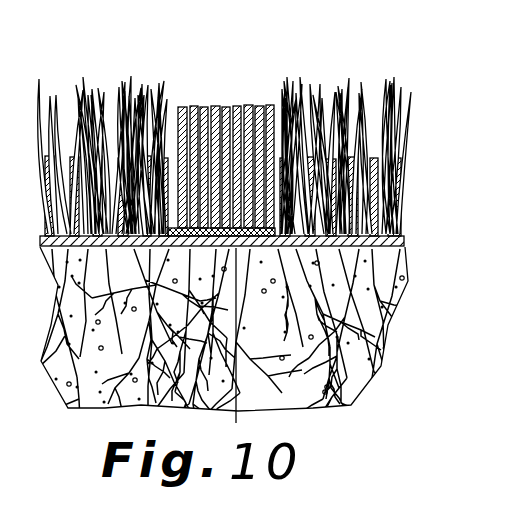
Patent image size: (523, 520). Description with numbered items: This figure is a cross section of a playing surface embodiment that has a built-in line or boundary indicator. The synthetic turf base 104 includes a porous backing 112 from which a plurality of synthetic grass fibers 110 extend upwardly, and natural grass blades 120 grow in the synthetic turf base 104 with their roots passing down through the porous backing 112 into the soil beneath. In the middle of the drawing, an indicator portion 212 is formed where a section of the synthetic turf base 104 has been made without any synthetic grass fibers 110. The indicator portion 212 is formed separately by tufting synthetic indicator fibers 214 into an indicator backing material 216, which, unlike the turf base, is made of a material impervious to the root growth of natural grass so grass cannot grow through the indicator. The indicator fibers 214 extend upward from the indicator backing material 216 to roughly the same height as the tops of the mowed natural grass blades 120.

The indicator portion 212 is at (210, 130).
The synthetic indicator fibers 214 is at (220, 97).
The natural grass blades 120 is at (405, 86).
The synthetic turf base 104 is at (379, 196).
The synthetic grass fibers 110 is at (393, 192).
The porous backing 112 is at (397, 236).
The indicator backing material 216 is at (226, 415).